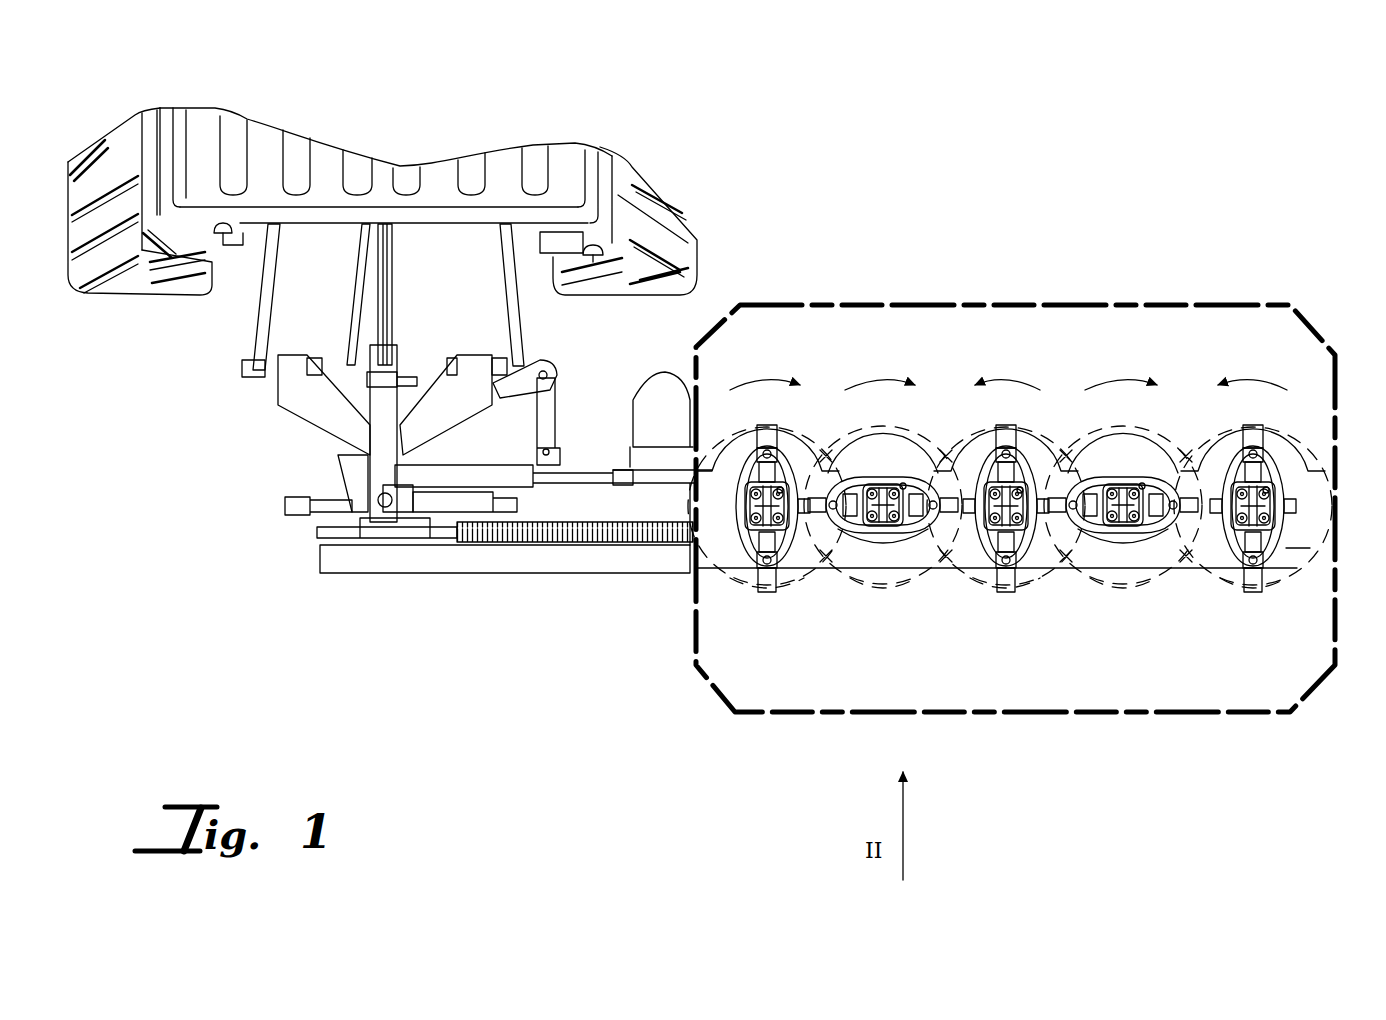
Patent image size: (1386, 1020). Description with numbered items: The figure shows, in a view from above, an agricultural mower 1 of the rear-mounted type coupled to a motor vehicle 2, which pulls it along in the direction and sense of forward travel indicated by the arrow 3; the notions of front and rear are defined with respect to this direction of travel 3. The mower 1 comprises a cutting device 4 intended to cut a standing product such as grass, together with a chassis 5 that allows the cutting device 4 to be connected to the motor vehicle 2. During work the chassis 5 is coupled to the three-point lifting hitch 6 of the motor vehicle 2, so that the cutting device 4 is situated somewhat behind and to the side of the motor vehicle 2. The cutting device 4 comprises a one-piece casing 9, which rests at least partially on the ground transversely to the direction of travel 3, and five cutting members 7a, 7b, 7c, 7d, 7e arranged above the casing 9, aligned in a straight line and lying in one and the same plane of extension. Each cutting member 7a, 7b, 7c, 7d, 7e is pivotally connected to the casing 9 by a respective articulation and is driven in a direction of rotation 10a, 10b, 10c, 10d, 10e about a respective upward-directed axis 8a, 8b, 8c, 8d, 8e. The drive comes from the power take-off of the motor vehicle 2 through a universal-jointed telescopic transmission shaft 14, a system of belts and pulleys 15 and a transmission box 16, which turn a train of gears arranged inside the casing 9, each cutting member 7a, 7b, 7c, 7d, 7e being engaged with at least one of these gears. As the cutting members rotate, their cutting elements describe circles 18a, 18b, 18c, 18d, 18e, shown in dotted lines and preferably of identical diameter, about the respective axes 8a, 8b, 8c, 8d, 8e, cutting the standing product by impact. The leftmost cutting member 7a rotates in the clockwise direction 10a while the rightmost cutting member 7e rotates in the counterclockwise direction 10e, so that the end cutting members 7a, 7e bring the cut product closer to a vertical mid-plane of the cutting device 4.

The agricultural mower 1 is at (578, 705).
The motor vehicle 2 is at (645, 150).
The arrow indicating direction of forward travel 3 is at (1068, 88).
The cutting device 4 is at (1273, 300).
The chassis 5 is at (292, 434).
The three-point lifting hitch 6 is at (246, 334).
The cutting member 7a is at (738, 550).
The cutting member 7b is at (853, 543).
The cutting member 7c is at (977, 558).
The cutting member 7d is at (1093, 548).
The cutting member 7e is at (1223, 555).
The axis of rotation 8a is at (780, 488).
The axis of rotation 8b is at (903, 484).
The axis of rotation 8c is at (1020, 488).
The axis of rotation 8d is at (1142, 484).
The axis of rotation 8e is at (1266, 488).
The casing 9 is at (1300, 546).
The direction of rotation 10a is at (766, 382).
The direction of rotation 10b is at (883, 382).
The direction of rotation 10c is at (1008, 382).
The direction of rotation 10d is at (1120, 382).
The direction of rotation 10e is at (1255, 382).
The universal-jointed telescopic transmission shaft 14 is at (350, 345).
The system of belts and pulleys 15 is at (385, 575).
The transmission box 16 is at (682, 517).
The circle 18a is at (803, 583).
The circle 18b is at (918, 585).
The circle 18c is at (1040, 590).
The circle 18d is at (1155, 585).
The circle 18e is at (1285, 590).